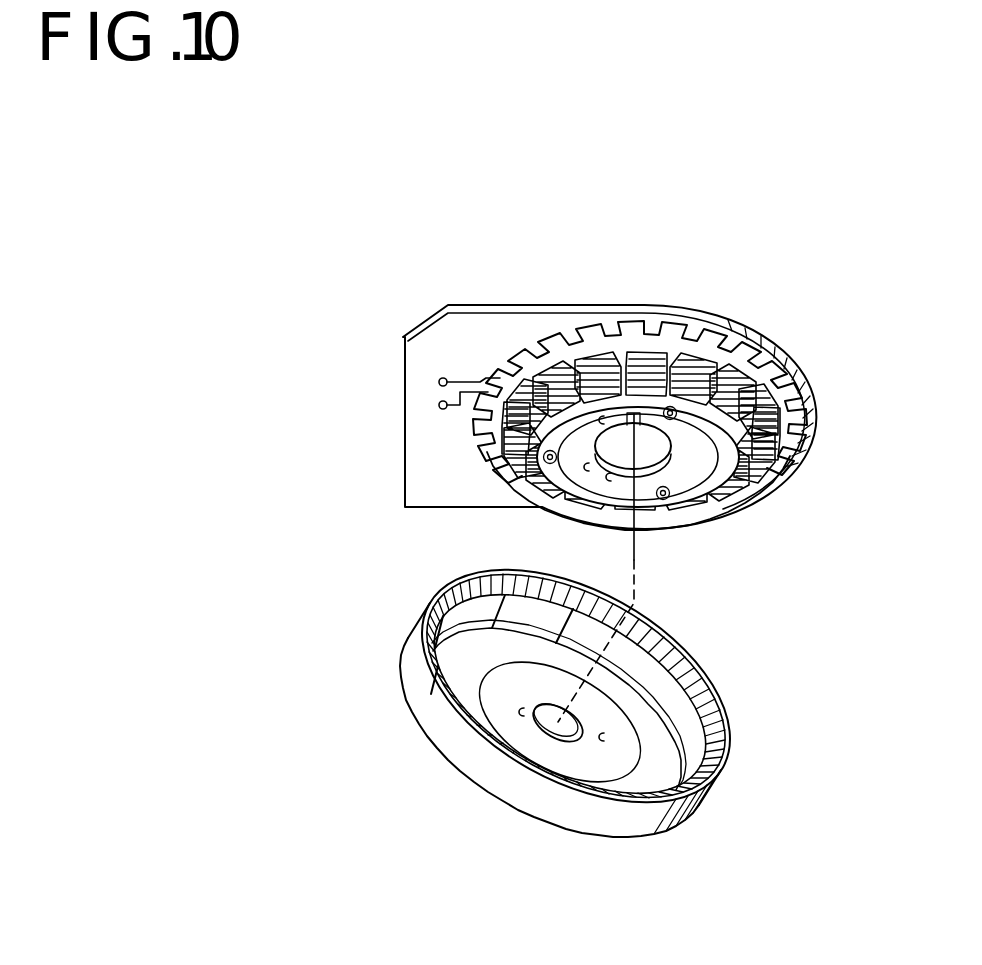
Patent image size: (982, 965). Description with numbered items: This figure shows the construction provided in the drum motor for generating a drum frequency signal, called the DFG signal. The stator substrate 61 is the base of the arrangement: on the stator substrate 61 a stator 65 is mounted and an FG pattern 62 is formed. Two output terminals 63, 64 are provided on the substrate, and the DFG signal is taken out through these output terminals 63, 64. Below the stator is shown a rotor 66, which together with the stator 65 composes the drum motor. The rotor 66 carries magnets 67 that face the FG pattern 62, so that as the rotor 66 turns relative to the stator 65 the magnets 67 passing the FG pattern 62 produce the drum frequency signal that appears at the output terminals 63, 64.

The stator substrate 61 is at (425, 480).
The FG pattern 62 is at (572, 333).
The output terminal 63 is at (433, 382).
The output terminal 64 is at (433, 405).
The stator 65 is at (745, 500).
The rotor 66 is at (703, 810).
The magnets 67 is at (713, 671).